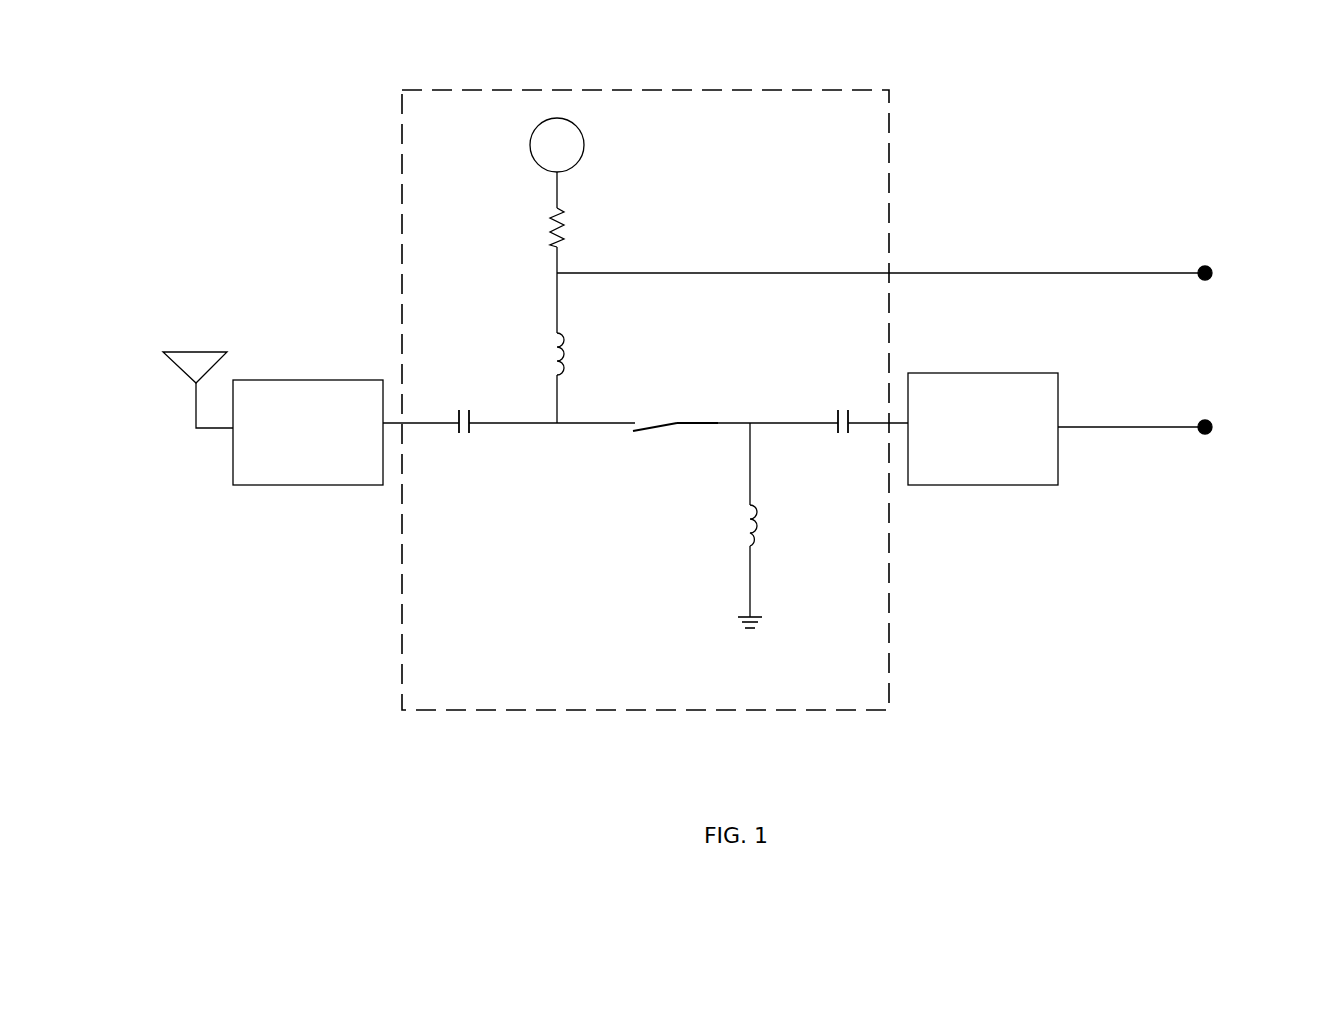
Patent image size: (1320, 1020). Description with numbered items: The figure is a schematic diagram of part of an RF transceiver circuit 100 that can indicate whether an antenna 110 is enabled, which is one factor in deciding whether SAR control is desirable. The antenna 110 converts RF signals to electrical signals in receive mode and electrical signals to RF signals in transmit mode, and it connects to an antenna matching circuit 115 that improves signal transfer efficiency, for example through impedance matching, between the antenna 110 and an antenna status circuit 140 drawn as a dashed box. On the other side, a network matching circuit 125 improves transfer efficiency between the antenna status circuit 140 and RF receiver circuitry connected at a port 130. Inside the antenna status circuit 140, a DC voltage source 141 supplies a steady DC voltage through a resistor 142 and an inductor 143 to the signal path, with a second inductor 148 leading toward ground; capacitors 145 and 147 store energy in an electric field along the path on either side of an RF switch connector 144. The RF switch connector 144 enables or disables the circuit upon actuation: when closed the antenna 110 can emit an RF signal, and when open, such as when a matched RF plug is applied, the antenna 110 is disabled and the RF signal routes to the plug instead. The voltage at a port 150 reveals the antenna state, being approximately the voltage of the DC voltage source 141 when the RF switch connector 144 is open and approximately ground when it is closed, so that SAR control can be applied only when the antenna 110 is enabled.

The RF transceiver circuit 100 is at (245, 101).
The antenna 110 is at (202, 355).
The antenna matching circuit 115 is at (295, 378).
The network matching circuit 125 is at (985, 372).
The port 130 is at (1159, 426).
The antenna status circuit 140 is at (647, 88).
The DC voltage source 141 is at (579, 163).
The resistor 142 is at (527, 270).
The inductor 143 is at (625, 475).
The RF switch connector 144 is at (735, 446).
The capacitor 145 is at (538, 439).
The capacitor 147 is at (864, 440).
The inductor 148 is at (750, 642).
The port 150 is at (906, 273).